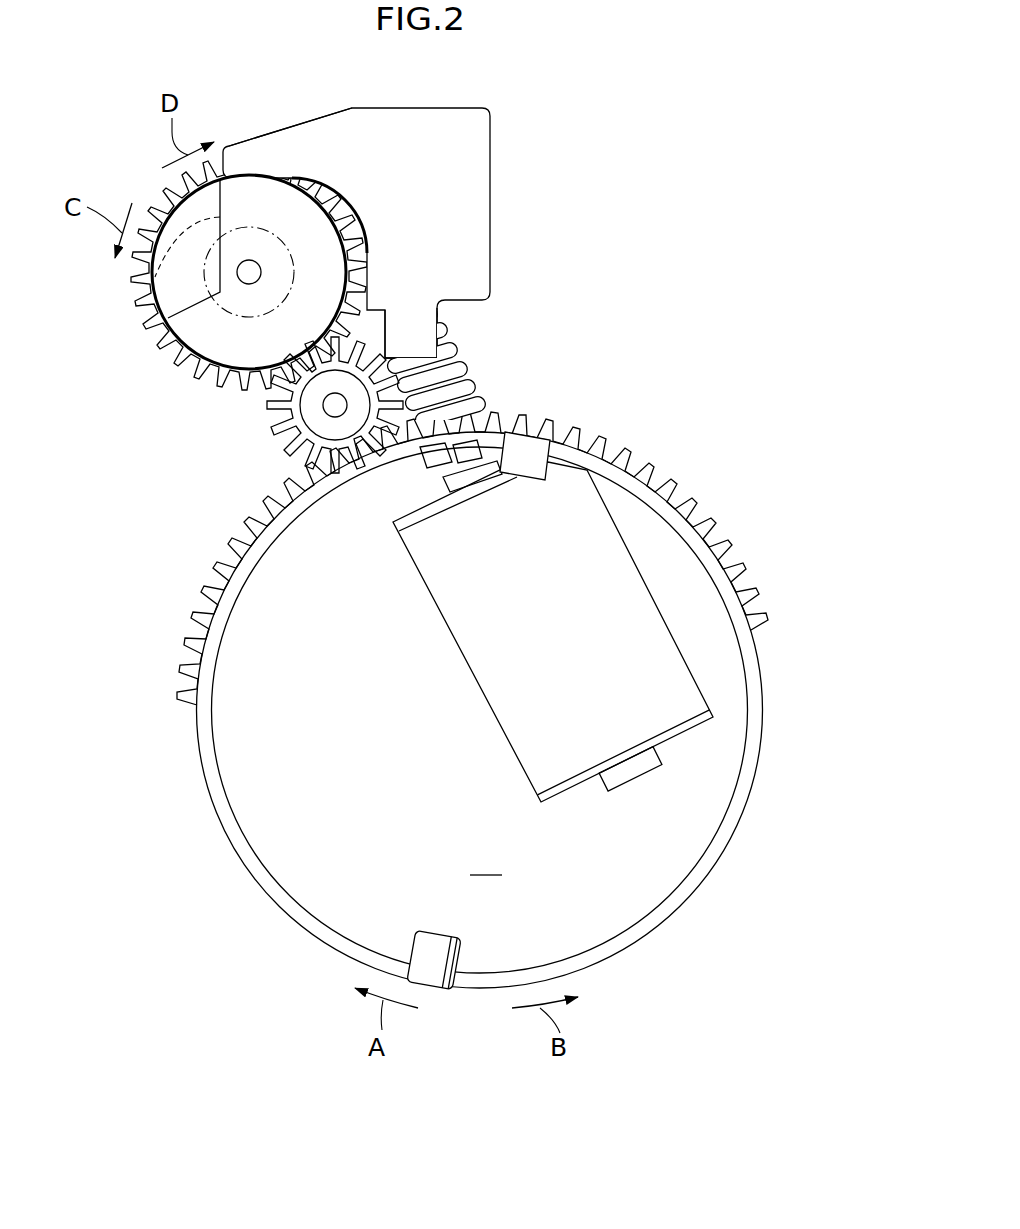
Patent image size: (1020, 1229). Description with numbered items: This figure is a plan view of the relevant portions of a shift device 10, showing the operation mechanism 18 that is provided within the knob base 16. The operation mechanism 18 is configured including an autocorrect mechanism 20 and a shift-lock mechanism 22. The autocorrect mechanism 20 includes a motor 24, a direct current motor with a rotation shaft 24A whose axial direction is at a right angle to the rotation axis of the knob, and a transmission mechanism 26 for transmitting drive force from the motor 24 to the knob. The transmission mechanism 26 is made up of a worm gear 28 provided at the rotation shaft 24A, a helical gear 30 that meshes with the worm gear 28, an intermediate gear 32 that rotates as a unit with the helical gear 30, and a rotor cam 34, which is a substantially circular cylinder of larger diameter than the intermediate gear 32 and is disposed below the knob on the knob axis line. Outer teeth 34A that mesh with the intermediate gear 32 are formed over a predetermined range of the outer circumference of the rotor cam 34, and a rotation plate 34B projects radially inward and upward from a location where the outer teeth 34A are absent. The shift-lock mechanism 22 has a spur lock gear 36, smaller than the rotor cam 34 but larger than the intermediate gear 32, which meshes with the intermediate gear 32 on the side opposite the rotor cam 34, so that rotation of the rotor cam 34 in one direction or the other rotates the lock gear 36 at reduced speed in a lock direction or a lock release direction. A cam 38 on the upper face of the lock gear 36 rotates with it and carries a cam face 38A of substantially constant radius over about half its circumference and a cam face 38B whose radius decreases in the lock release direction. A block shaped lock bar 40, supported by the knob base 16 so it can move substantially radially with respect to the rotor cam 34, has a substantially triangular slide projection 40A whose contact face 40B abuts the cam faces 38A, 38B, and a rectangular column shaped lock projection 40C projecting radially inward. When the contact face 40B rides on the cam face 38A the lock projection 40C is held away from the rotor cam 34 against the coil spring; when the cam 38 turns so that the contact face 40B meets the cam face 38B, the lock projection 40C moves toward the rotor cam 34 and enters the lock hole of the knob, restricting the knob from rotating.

The image forming apparatus 10 is at (673, 252).
The knob base 16 is at (487, 860).
The operation mechanism 18 is at (636, 335).
The autocorrect mechanism 20 is at (160, 588).
The shift-lock mechanism 22 is at (205, 406).
The motor 24 is at (457, 603).
The rotation shaft 24A is at (477, 460).
The transmission mechanism 26 is at (260, 457).
The worm gear 28 is at (467, 362).
The helical gear 30 is at (262, 425).
The intermediate gear 32 is at (343, 460).
The rotor cam 34 is at (232, 852).
The outer teeth 34A is at (183, 682).
The rotation plate 34B is at (463, 950).
The lock gear 36 is at (173, 232).
The cam 38 is at (168, 340).
The cam face 38A is at (348, 193).
The cam face 38B is at (215, 283).
The lock bar 40 is at (495, 190).
The slide projection 40A is at (277, 142).
The contact face 40B is at (288, 176).
The lock projection 40C is at (416, 335).